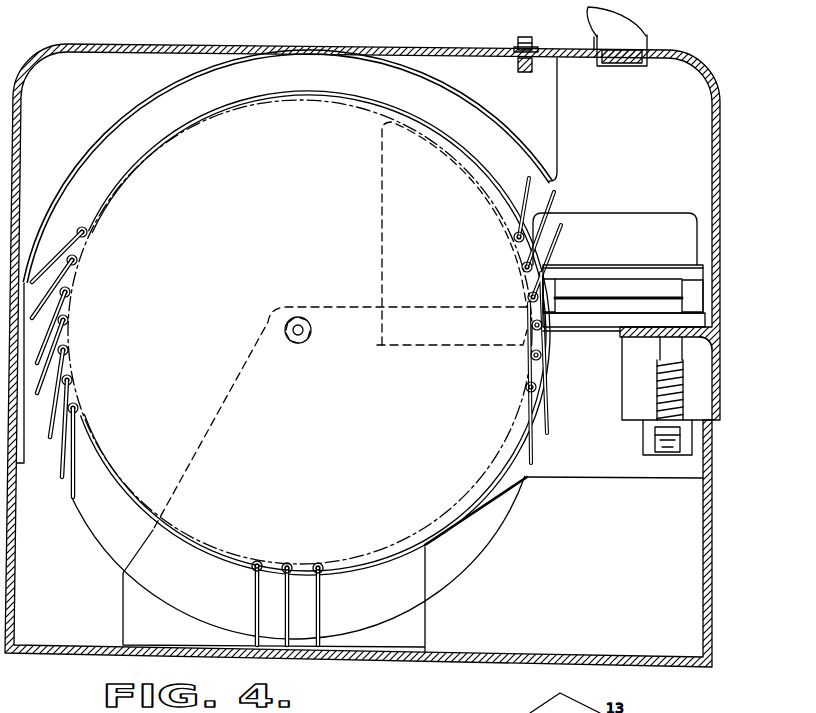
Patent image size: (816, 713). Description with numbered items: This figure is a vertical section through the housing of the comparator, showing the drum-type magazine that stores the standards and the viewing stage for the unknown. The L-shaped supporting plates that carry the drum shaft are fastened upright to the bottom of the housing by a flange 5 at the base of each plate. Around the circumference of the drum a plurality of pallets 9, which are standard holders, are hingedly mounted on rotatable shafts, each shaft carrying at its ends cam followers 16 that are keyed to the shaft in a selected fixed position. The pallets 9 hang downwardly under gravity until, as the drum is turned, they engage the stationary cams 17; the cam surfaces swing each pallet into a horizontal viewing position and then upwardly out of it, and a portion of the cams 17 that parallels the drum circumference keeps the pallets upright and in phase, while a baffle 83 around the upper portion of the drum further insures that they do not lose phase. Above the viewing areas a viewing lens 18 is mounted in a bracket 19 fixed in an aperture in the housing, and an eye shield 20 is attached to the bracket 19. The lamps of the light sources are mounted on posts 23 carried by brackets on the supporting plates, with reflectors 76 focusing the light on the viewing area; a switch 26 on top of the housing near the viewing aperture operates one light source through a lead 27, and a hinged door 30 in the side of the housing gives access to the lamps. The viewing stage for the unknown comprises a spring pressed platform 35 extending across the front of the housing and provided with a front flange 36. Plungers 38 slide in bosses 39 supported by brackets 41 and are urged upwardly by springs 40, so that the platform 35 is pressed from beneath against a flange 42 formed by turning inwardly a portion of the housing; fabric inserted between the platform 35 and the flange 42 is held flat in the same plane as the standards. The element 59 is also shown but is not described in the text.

The flange 5 is at (300, 344).
The pallets 9 is at (60, 467).
The cam followers 16 is at (87, 236).
The stationary cams 17 is at (382, 243).
The viewing lens 18 is at (622, 67).
The bracket 19 is at (597, 46).
The eye shield 20 is at (649, 28).
The posts 23 is at (698, 297).
The switch 26 is at (517, 38).
The lead 27 is at (518, 71).
The hinged door 30 is at (615, 228).
The spring pressed platform 35 is at (698, 338).
The front flange 36 is at (722, 395).
The plungers 38 is at (683, 400).
The bosses 39 is at (676, 456).
The springs 40 is at (657, 367).
The brackets 41 is at (644, 442).
The flange 42 is at (650, 326).
The support bar 59 is at (548, 412).
The reflectors 76 is at (683, 262).
The baffle 83 is at (558, 136).